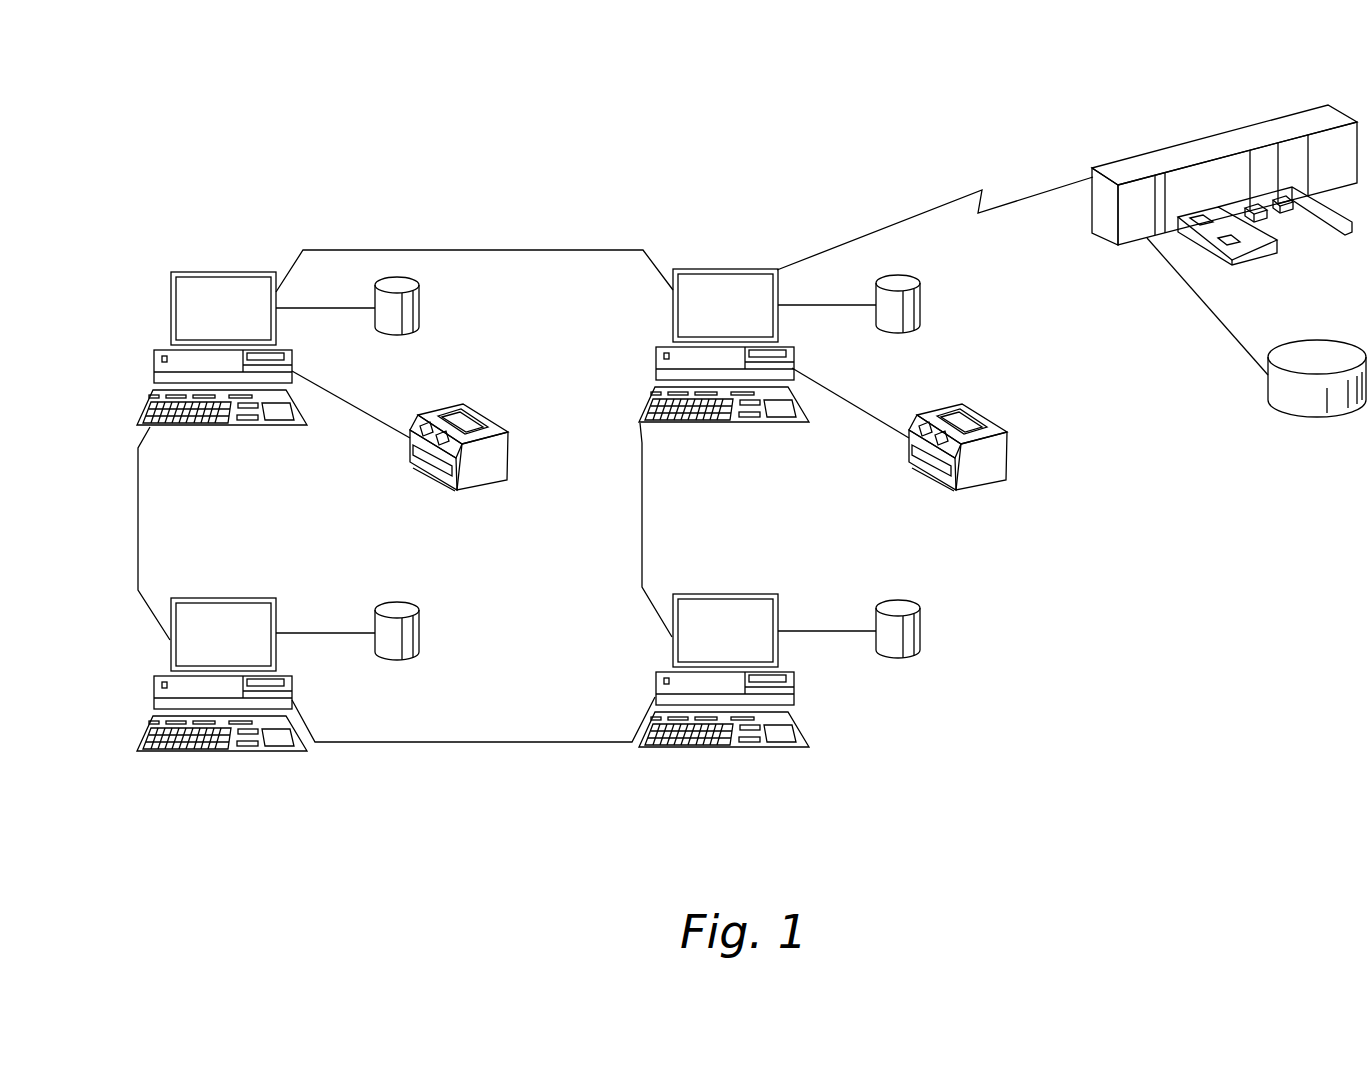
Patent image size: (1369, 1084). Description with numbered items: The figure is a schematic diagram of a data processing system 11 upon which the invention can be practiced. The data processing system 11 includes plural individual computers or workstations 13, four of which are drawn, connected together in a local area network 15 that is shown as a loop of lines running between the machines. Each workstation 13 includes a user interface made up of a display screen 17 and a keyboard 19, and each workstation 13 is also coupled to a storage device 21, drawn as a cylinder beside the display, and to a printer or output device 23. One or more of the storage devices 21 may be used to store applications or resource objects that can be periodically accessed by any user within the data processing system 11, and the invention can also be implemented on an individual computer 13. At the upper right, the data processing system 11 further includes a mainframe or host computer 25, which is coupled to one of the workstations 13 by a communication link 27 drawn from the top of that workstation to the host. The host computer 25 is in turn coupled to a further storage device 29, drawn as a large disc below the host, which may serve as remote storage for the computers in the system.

The data processing system 11 is at (416, 185).
The workstation 13 is at (235, 272).
The local area network 15 is at (502, 742).
The display screen 17 is at (185, 302).
The keyboard 19 is at (150, 400).
The storage device 21 is at (421, 302).
The printer 23 is at (433, 474).
The host computer 25 is at (1192, 142).
The communication link 27 is at (1013, 202).
The storage device 29 is at (1307, 417).